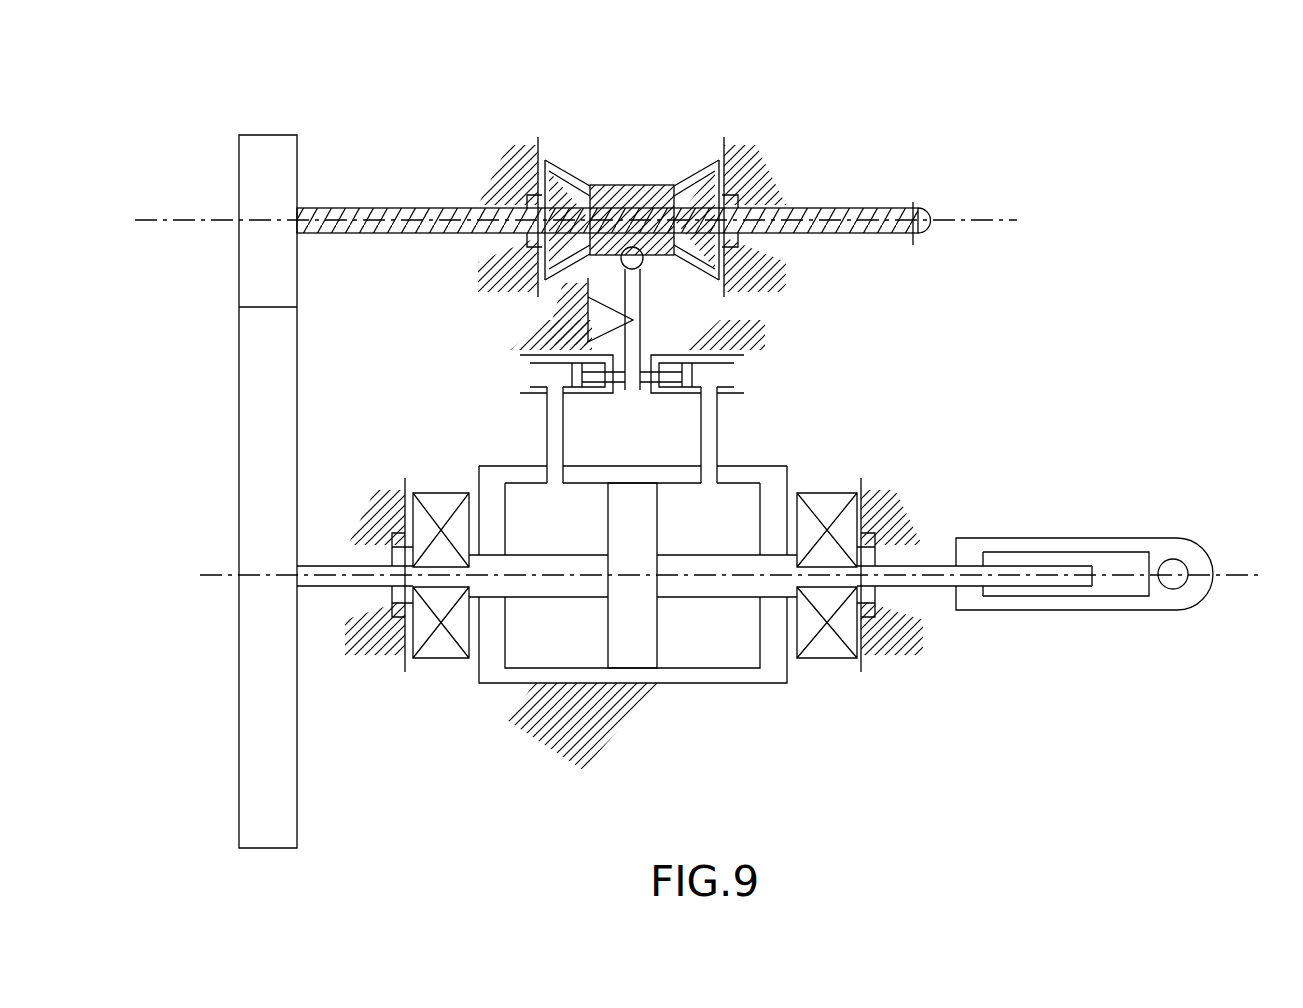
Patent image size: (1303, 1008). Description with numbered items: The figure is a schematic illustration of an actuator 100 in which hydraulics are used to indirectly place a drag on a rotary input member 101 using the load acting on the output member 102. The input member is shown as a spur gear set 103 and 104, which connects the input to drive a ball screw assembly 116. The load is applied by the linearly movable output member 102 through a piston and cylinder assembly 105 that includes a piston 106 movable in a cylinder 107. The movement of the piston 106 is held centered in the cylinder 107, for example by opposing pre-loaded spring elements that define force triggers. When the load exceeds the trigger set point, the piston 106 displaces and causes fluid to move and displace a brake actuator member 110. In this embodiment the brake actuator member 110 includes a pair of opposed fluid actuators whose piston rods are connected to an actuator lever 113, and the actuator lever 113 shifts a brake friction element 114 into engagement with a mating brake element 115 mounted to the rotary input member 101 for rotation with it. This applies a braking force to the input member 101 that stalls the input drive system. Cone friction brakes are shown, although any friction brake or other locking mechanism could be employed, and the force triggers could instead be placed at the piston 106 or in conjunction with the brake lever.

The actuator 100 is at (1147, 270).
The rotary input member 101 is at (417, 205).
The output member 102 is at (1104, 613).
The spur gear 103 is at (268, 134).
The spur gear 104 is at (237, 519).
The piston and cylinder assembly 105 is at (792, 463).
The piston 106 is at (663, 648).
The cylinder 107 is at (501, 688).
The brake actuator member 110 is at (752, 366).
The actuator lever 113 is at (646, 297).
The brake friction element 114 is at (641, 183).
The mating brake element 115 is at (752, 176).
The ball screw assembly 116 is at (977, 603).